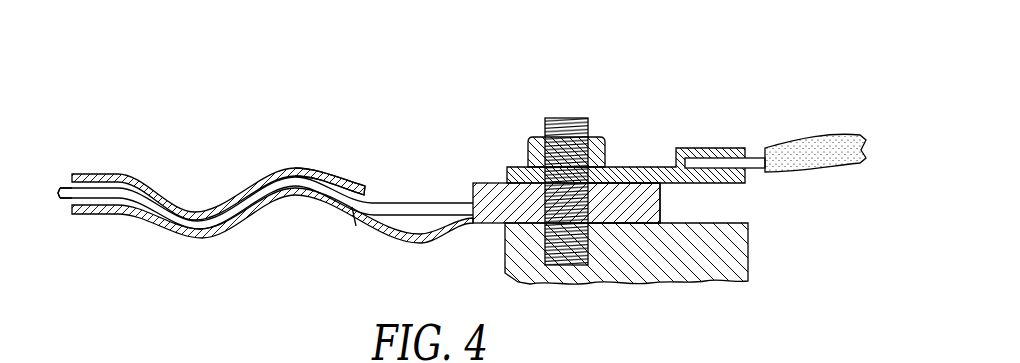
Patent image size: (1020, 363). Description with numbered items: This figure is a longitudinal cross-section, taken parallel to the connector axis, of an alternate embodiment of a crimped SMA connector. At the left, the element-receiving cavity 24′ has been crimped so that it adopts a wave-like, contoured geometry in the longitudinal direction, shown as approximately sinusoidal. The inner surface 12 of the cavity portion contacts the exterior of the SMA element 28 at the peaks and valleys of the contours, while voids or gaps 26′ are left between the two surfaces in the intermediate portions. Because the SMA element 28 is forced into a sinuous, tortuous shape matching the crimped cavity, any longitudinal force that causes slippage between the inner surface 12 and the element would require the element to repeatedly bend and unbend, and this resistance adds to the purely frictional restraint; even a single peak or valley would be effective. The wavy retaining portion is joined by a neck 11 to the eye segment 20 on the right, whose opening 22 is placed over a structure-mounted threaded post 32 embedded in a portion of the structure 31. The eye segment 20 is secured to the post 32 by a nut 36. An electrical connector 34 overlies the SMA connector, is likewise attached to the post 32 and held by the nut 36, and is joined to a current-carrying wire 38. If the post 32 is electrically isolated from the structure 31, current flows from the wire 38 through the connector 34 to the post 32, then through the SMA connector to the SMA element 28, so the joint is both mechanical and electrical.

The element-receiving cavity 24′ is at (72, 185).
The SMA element 28 is at (225, 212).
The voids or gaps 26′ is at (338, 190).
The inner surface 12 is at (372, 198).
The neck 11 is at (432, 240).
The nut 36 is at (528, 151).
The threaded post 32 is at (578, 118).
The electrical connector 34 is at (716, 140).
The current-carrying wire 38 is at (752, 158).
The structure 31 is at (737, 242).
The eye segment 20 is at (665, 204).
The opening 22 is at (593, 213).